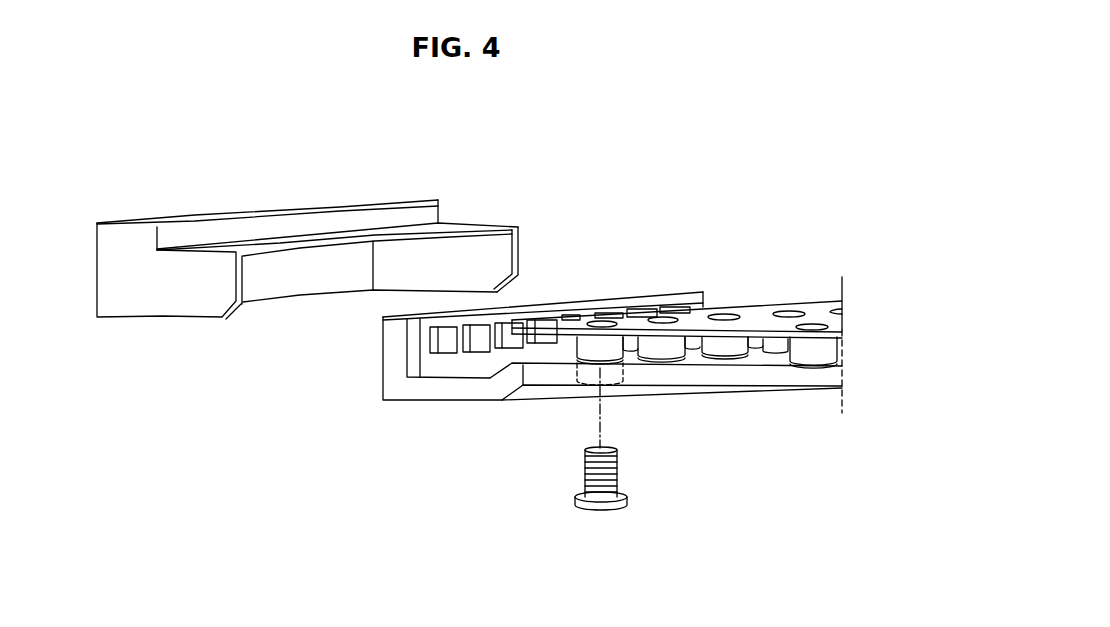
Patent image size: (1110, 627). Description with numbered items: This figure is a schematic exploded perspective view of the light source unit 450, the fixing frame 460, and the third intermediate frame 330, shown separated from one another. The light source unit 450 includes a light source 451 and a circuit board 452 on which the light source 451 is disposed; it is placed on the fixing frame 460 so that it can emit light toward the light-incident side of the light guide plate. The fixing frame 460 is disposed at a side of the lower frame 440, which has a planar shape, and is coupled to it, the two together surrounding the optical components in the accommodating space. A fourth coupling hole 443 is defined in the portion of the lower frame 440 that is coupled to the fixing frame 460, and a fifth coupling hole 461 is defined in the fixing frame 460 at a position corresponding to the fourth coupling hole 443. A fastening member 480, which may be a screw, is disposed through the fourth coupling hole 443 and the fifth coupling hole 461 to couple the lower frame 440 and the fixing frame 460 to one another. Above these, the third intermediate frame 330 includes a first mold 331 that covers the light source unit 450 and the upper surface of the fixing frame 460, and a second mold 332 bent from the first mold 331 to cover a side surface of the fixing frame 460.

The third intermediate frame 330 is at (85, 161).
The first mold 331 is at (275, 240).
The second mold 332 is at (94, 264).
The lower frame 440 is at (753, 308).
The fourth coupling hole 443 is at (725, 345).
The light source unit 450 is at (413, 457).
The light source 451 is at (450, 342).
The circuit board 452 is at (432, 367).
The fixing frame 460 is at (392, 363).
The fifth coupling hole 461 is at (608, 384).
The fastening member 480 is at (599, 510).